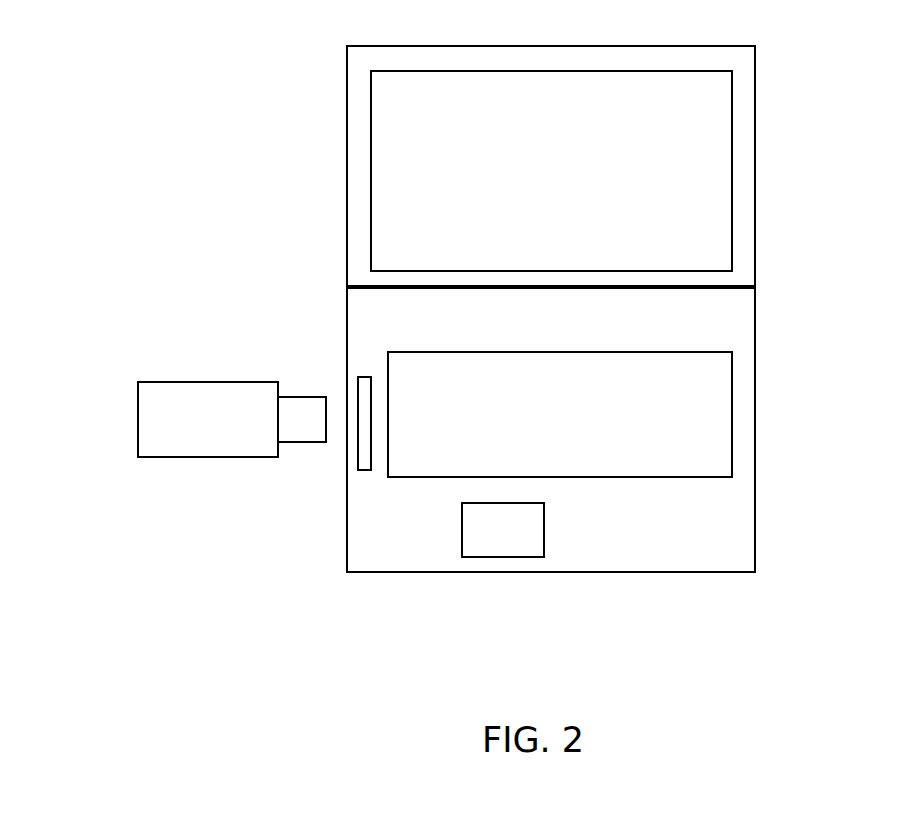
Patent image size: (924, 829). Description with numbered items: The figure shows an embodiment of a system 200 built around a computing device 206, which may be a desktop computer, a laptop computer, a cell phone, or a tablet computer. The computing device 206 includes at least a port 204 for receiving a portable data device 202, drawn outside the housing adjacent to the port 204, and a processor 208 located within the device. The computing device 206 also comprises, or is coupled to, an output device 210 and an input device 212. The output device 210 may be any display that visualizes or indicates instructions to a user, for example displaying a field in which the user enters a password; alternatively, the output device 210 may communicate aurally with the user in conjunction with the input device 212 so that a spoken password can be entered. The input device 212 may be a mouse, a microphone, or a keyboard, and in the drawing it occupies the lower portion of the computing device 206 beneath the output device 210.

The system 200 is at (203, 89).
The portable data device 202 is at (235, 446).
The port 204 is at (360, 460).
The computing device 206 is at (418, 329).
The processor 208 is at (493, 511).
The output device 210 is at (605, 156).
The input device 212 is at (625, 438).